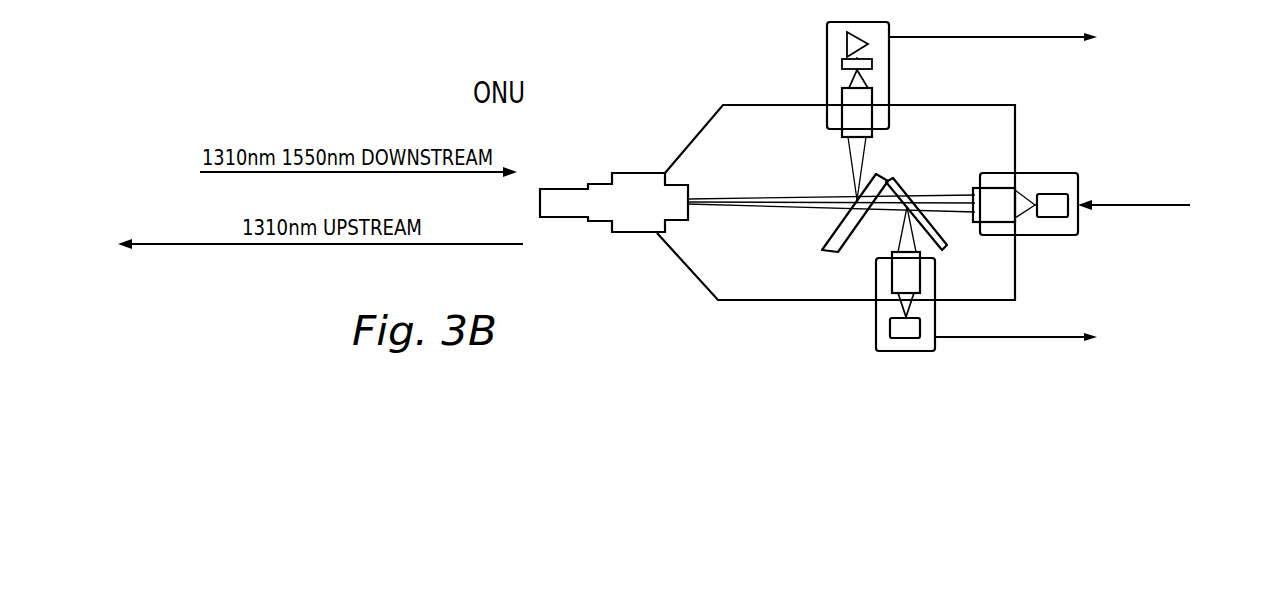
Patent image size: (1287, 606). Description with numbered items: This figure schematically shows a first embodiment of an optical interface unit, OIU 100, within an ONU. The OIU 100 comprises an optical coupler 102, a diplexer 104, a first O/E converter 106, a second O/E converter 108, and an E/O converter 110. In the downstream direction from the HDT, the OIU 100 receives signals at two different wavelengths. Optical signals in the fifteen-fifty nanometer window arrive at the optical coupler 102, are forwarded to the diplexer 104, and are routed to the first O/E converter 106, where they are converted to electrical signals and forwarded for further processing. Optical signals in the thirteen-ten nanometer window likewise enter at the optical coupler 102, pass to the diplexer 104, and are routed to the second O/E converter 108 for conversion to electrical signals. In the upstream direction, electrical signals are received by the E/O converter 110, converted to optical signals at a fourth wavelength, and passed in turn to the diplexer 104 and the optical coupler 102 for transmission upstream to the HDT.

The OIU 100 is at (667, 284).
The optical coupler 102 is at (628, 172).
The diplexer 104 is at (823, 231).
The first O/E converter 106 is at (868, 22).
The second O/E converter 108 is at (913, 351).
The E/O converter 110 is at (1055, 235).